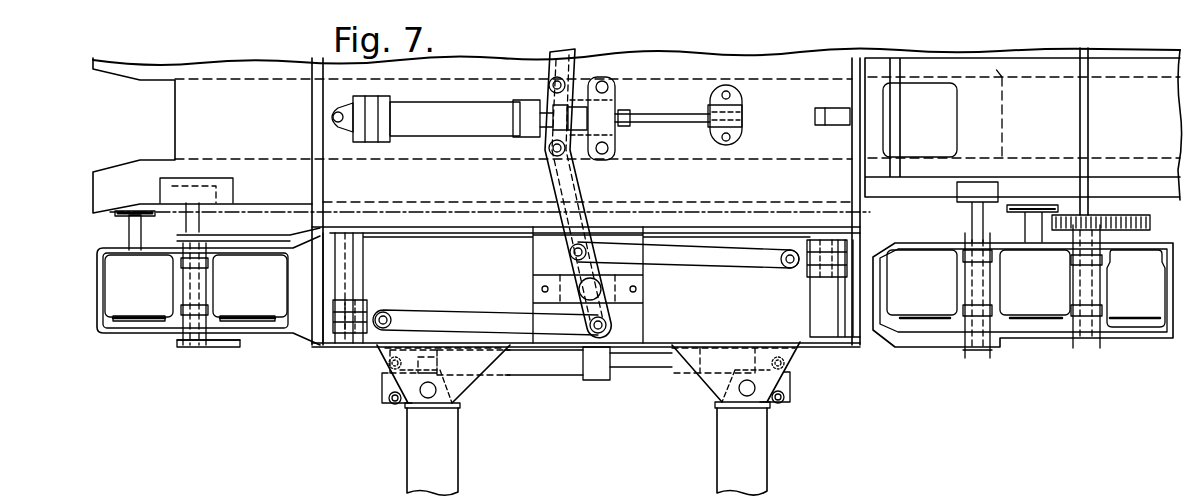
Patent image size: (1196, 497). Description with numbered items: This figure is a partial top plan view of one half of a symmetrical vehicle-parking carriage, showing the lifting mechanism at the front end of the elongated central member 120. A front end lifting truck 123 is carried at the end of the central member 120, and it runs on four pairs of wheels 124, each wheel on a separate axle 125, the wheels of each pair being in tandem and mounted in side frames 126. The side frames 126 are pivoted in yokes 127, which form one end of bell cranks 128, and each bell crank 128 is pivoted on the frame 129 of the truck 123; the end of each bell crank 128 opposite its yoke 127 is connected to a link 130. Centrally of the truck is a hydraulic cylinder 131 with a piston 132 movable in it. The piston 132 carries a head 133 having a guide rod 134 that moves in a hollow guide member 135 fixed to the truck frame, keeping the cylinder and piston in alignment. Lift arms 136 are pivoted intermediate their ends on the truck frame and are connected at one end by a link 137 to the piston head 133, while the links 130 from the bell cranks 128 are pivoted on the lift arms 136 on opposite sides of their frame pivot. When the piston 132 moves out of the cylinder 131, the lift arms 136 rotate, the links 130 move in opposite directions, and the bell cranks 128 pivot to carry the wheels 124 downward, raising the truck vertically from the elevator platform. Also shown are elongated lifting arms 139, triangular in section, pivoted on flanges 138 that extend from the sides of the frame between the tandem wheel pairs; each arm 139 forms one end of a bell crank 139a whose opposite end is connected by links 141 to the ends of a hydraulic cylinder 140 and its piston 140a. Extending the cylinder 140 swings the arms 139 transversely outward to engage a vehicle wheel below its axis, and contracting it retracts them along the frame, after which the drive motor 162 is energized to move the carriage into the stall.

The central member 120 is at (275, 160).
The front end lifting truck 123 is at (310, 103).
The wheels 124 is at (116, 287).
The axle 125 is at (130, 316).
The side frames 126 is at (140, 335).
The yokes 127 is at (290, 338).
The bell cranks 128 is at (353, 305).
The frame 129 is at (412, 236).
The link 130 is at (423, 316).
The hydraulic cylinder 131 is at (402, 127).
The piston 132 is at (535, 120).
The head 133 is at (600, 132).
The guide rod 134 is at (680, 115).
The hollow guide member 135 is at (742, 118).
The lift arms 136 is at (548, 80).
The link 137 is at (585, 85).
The flanges 138 is at (455, 395).
The lifting arms 139 is at (450, 447).
The bell cranks 139a is at (420, 407).
The hydraulic cylinder 140 is at (560, 375).
The piston 140a is at (660, 363).
The links 141 is at (395, 375).
The drive motor 162 is at (1106, 300).